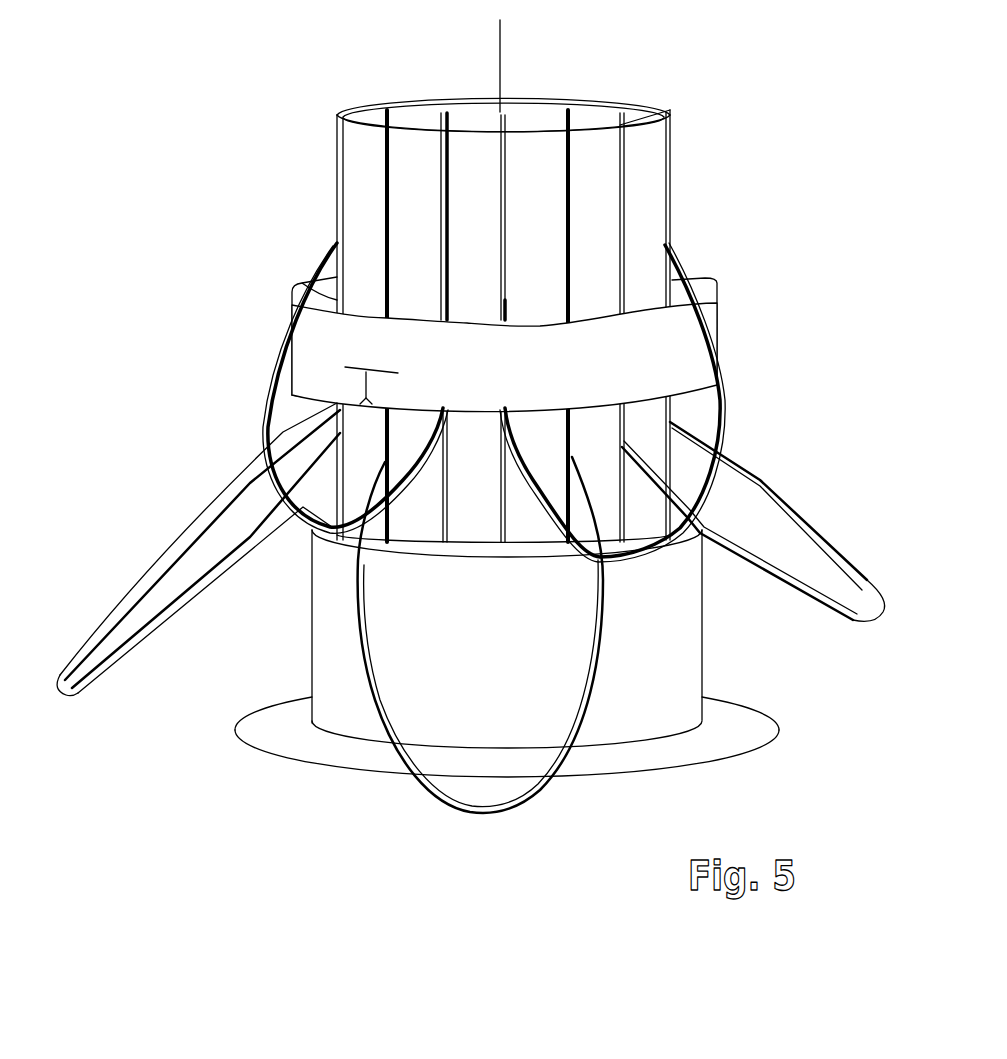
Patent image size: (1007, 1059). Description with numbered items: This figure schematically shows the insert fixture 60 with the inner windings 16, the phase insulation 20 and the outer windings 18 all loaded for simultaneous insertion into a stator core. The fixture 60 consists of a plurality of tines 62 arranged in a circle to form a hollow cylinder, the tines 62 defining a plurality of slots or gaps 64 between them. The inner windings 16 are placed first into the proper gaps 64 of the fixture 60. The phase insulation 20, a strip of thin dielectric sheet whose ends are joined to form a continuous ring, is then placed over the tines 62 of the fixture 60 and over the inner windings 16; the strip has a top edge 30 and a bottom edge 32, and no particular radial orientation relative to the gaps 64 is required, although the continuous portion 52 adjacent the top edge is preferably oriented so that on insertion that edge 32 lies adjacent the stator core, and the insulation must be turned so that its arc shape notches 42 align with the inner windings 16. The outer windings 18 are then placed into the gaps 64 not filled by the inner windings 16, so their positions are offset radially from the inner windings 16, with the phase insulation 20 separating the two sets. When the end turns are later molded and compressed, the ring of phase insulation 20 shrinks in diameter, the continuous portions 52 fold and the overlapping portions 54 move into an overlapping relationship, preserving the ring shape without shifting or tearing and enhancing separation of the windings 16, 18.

The inner windings 16 is at (165, 563).
The outer windings 18 is at (722, 397).
The phase insulation 20 is at (690, 345).
The top edge 30 is at (323, 303).
The bottom edge 32 is at (298, 392).
The arc shape notches 42 is at (537, 298).
The continuous portion 52 is at (366, 344).
The overlapping portions 54 is at (383, 387).
The insert fixture 60 is at (283, 58).
The tines 62 is at (472, 117).
The gaps 64 is at (500, 112).